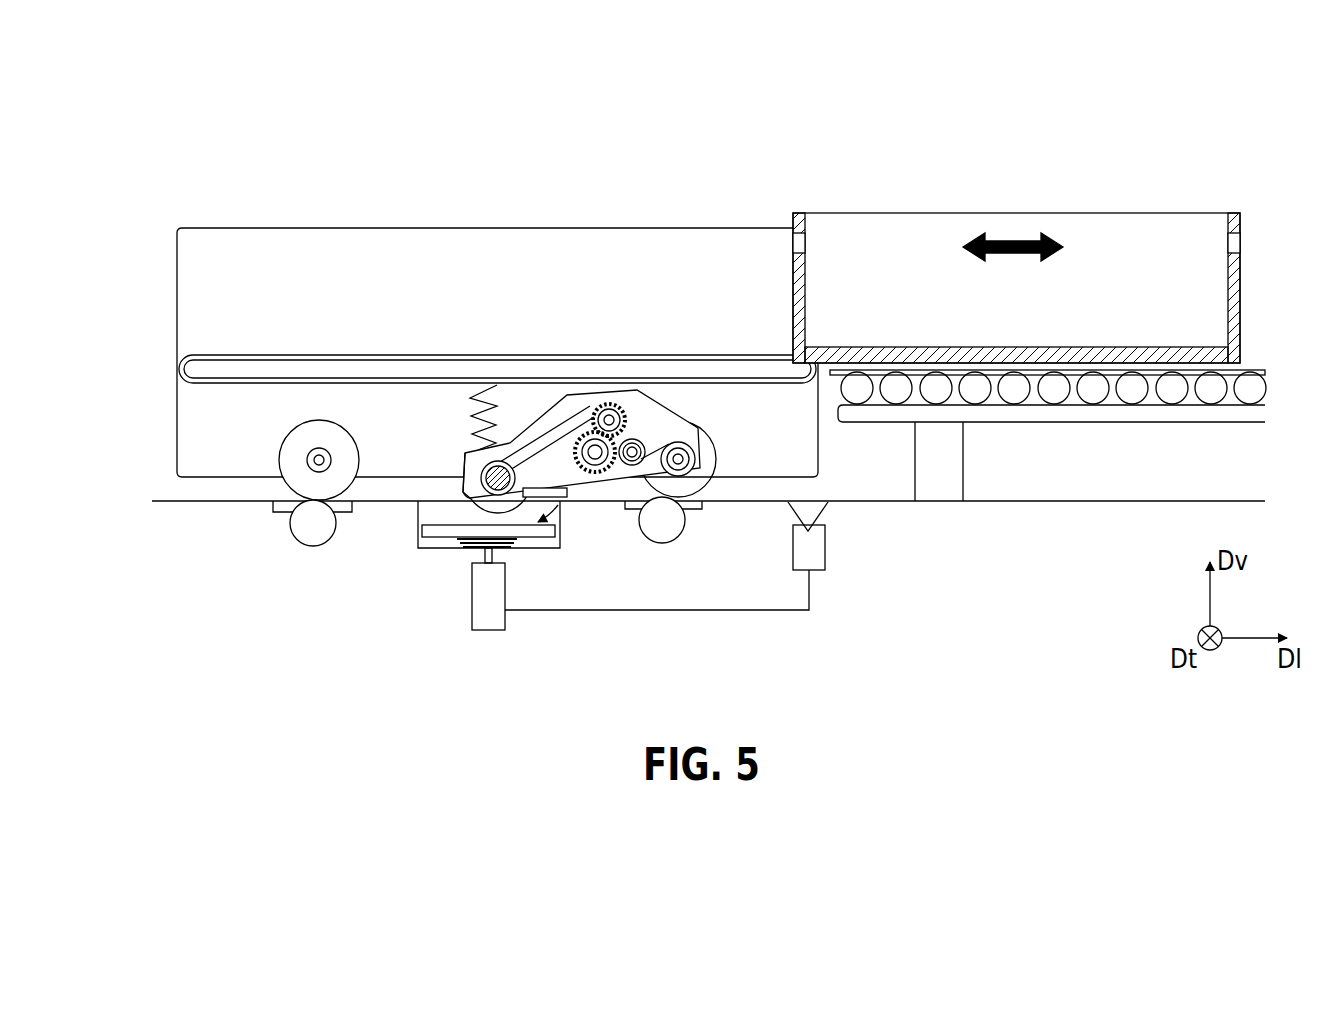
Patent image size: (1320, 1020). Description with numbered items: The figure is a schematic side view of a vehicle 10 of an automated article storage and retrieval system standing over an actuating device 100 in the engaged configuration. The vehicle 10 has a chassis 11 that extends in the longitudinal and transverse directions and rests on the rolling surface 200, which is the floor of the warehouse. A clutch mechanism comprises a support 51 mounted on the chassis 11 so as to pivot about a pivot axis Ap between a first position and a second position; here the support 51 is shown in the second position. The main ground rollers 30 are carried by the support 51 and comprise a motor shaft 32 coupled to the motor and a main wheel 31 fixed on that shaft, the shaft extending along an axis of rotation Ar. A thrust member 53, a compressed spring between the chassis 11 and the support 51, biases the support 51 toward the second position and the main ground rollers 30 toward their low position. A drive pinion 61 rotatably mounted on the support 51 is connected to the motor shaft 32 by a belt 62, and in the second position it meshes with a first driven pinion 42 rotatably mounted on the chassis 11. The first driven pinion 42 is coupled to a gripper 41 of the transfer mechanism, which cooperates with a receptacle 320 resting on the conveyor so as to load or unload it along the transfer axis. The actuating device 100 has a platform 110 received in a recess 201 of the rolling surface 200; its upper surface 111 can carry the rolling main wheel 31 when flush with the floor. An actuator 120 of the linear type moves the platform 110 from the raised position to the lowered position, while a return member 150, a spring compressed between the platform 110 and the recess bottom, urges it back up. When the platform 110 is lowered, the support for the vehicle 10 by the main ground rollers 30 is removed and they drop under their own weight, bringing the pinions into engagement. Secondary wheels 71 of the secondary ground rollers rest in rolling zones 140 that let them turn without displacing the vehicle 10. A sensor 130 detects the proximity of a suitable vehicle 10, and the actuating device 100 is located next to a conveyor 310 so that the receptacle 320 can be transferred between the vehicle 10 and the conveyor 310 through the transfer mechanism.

The vehicle 10 is at (185, 162).
The chassis 11 is at (267, 227).
The main ground rollers 30 is at (407, 162).
The main wheel 31 is at (464, 490).
The motor shaft 32 is at (466, 455).
The gripper 41 is at (813, 351).
The first driven pinion 42 is at (592, 418).
The support 51 is at (653, 420).
The thrust member 53 is at (497, 385).
The drive pinion 61 is at (631, 390).
The belt 62 is at (579, 412).
The secondary wheel 71 is at (703, 480).
The pivot axis Ap is at (672, 450).
The axis of rotation Ar is at (500, 482).
The actuating device 100 is at (373, 687).
The platform 110 is at (438, 532).
The upper surface of the platform 111 is at (558, 507).
The actuator 120 is at (490, 617).
The sensor 130 is at (810, 555).
The rolling zone 140 is at (312, 522).
The return member 150 is at (503, 545).
The rolling surface 200 is at (183, 502).
The recess 201 is at (437, 507).
The conveyor 310 is at (1053, 438).
The container 320 is at (932, 213).